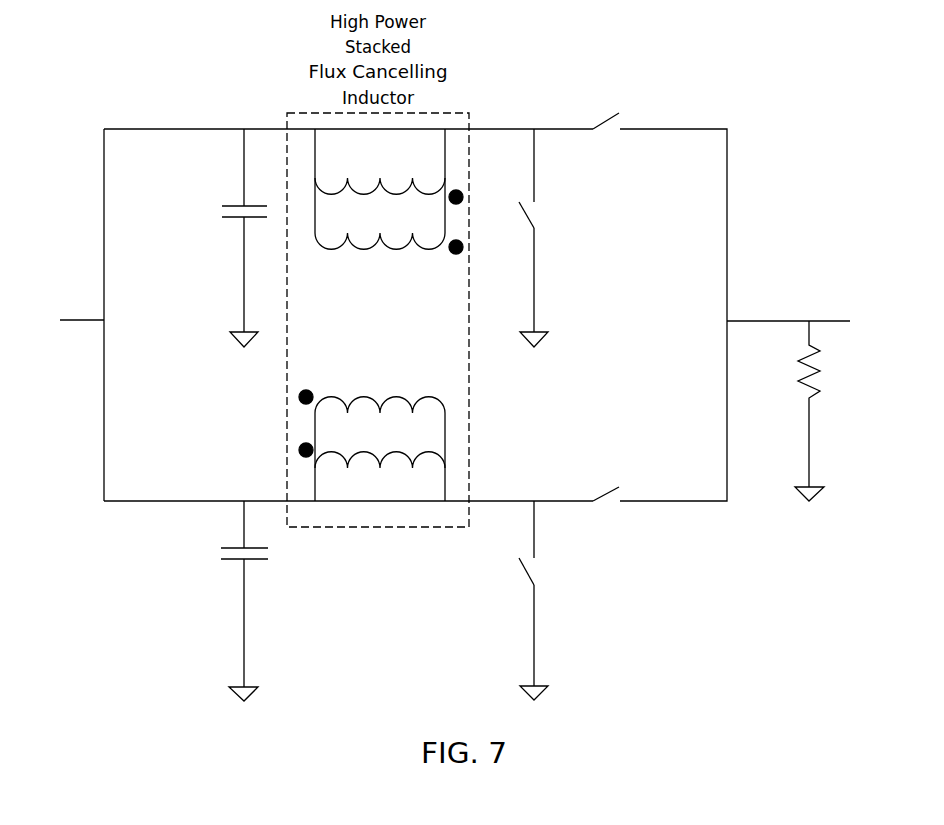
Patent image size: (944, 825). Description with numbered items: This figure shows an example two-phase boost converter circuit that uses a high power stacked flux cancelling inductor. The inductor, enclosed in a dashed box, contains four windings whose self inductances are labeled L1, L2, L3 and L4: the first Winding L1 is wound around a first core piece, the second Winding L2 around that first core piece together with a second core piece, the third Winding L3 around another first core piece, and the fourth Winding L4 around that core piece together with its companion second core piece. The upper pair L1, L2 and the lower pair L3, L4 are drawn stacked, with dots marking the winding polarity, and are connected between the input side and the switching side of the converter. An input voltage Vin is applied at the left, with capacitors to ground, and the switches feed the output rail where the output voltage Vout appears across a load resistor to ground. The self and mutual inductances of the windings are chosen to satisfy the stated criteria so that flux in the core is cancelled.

The self inductance of first Winding L1 is at (389, 200).
The self inductance of second Winding L2 is at (389, 256).
The self inductance of third Winding L3 is at (372, 393).
The self inductance of fourth Winding L4 is at (372, 449).
The input voltage Vin is at (63, 320).
The output voltage Vout is at (812, 321).